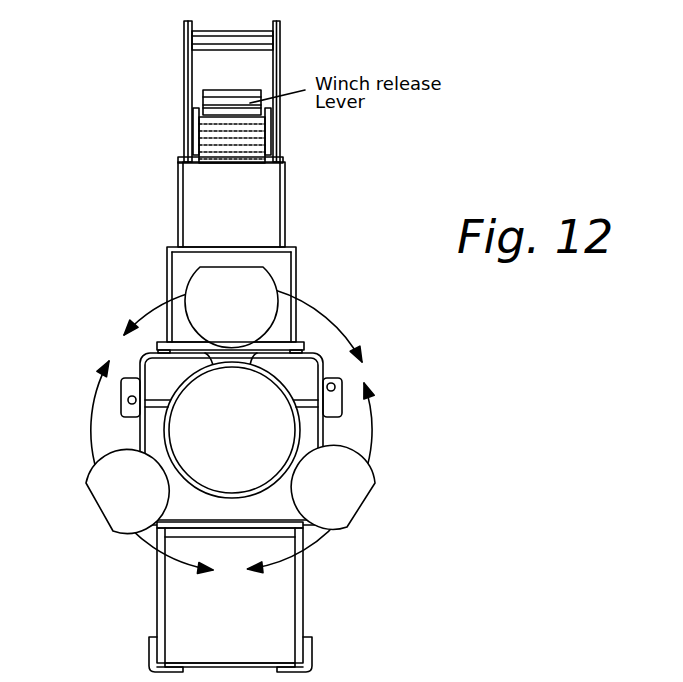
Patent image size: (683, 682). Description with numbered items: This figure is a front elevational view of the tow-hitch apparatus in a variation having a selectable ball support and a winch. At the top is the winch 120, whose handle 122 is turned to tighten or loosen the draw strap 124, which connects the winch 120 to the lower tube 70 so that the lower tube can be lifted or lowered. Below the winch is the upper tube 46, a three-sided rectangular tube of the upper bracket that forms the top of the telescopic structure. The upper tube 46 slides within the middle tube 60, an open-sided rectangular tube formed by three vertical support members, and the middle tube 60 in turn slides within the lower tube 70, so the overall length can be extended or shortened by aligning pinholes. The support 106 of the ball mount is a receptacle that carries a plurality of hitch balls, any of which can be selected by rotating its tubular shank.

The handle 122 is at (203, 40).
The draw strap 124 is at (191, 138).
The winch 120 is at (258, 133).
The upper tube 46 is at (260, 205).
The middle tube 60 is at (279, 259).
The support 106 is at (232, 428).
The lower tube 70 is at (292, 610).